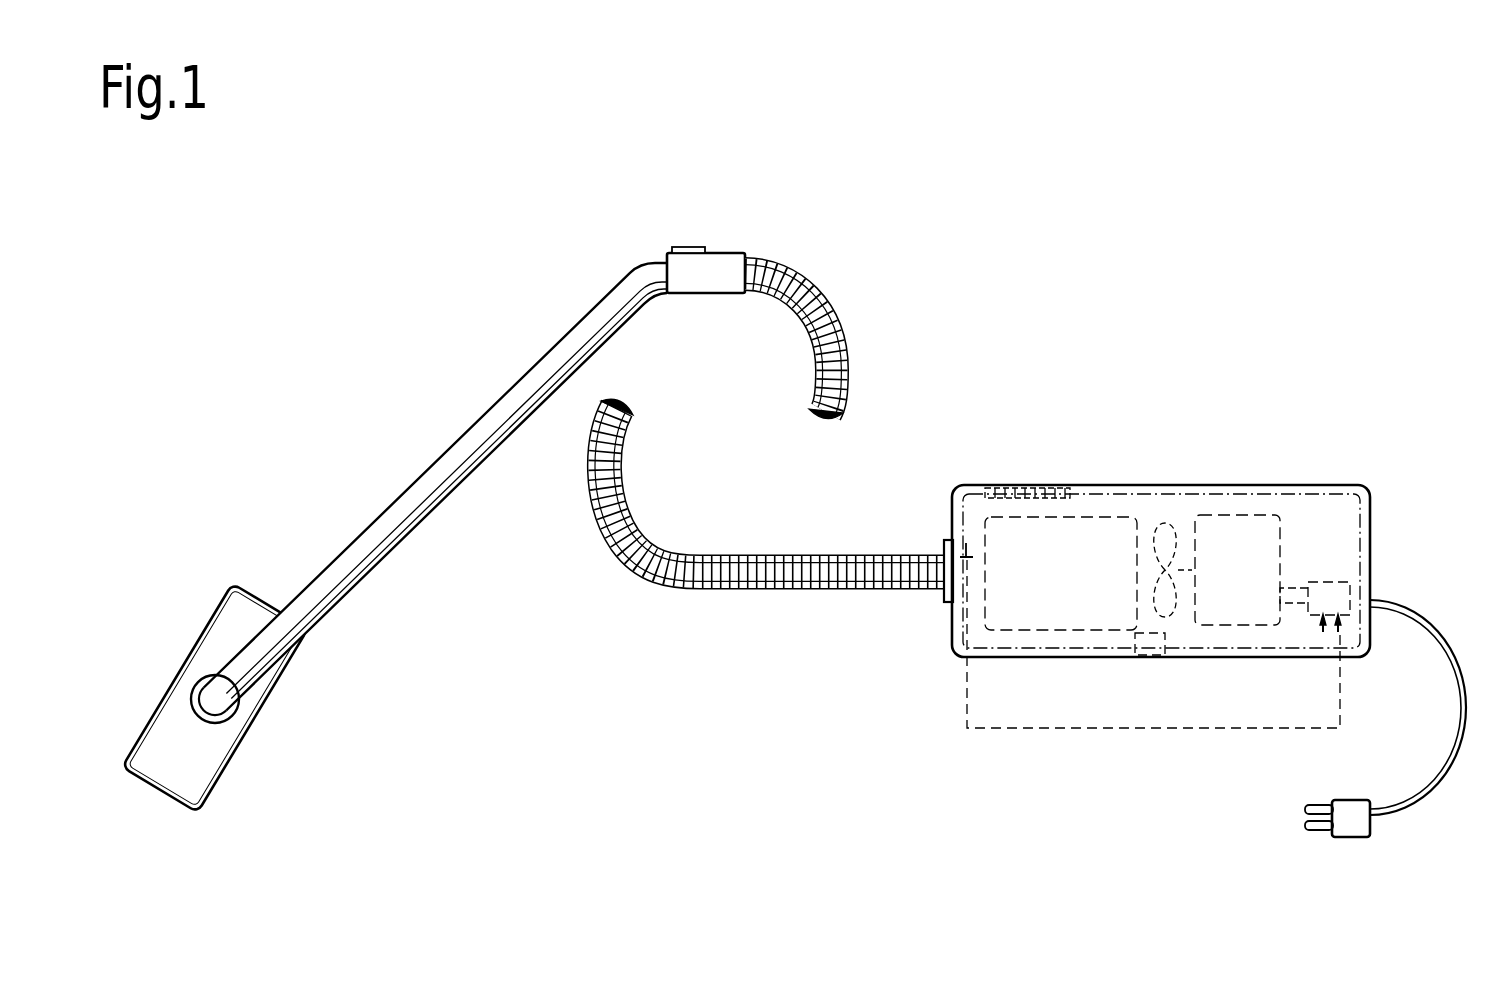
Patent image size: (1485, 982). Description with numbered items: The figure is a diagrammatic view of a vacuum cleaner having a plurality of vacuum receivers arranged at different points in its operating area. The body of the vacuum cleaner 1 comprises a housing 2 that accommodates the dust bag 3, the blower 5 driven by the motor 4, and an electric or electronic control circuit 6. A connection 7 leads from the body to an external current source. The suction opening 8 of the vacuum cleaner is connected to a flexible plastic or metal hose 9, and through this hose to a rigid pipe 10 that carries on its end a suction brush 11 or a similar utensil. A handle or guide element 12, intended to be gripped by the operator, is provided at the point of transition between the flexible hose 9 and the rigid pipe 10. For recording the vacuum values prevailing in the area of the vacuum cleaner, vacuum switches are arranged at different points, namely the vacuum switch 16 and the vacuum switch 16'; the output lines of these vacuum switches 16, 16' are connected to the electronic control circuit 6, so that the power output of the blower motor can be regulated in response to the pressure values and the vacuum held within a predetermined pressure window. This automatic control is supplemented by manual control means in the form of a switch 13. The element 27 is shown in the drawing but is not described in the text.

The hair dryer apparatus 1 is at (1093, 480).
The housing / enclosure 2 is at (1253, 487).
The control electronics unit 3 is at (1029, 632).
The power supply unit 4 is at (1212, 627).
The fan 5 is at (1165, 523).
The power connector socket 6 is at (1320, 582).
The power cord with plug 7 is at (1455, 720).
The hose connector 8 is at (946, 540).
The flexible hose 9 is at (812, 372).
The support arm 10 is at (413, 500).
The base plate 11 is at (200, 667).
The hose holder block 12 is at (738, 255).
The clamp tab 13 is at (685, 247).
The sensor unit 16 is at (1143, 677).
The sensor lead 16' is at (1145, 535).
The air inlet grille 27 is at (1028, 488).